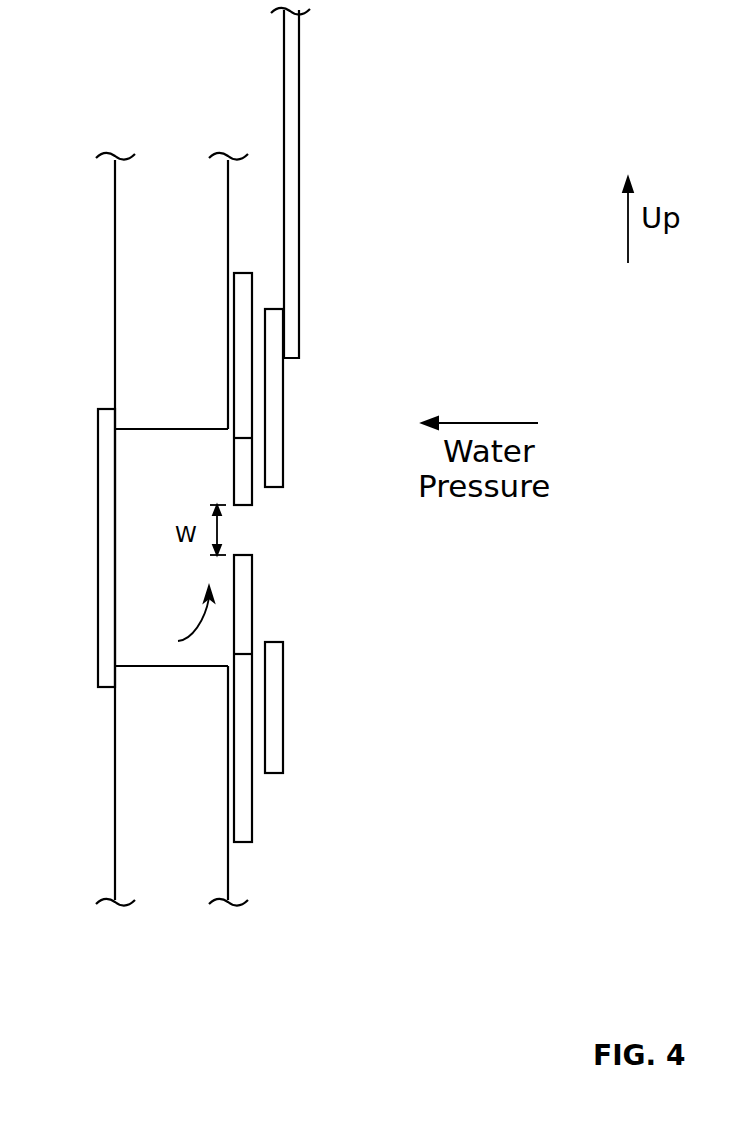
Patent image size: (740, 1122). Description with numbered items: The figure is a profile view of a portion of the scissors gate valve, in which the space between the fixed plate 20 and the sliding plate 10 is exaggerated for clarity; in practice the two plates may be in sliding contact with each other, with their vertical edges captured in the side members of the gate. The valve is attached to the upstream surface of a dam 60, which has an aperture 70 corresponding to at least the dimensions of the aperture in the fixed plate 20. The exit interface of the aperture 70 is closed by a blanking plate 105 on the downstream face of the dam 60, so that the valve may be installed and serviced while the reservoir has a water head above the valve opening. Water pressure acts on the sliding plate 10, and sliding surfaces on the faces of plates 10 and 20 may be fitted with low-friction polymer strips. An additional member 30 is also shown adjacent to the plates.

The sliding plate 10 is at (283, 418).
The fixed plate 20 is at (252, 577).
The upper panel 30 is at (299, 165).
The dam 60 is at (187, 274).
The aperture 70 is at (178, 621).
The blanking plate 105 is at (98, 533).